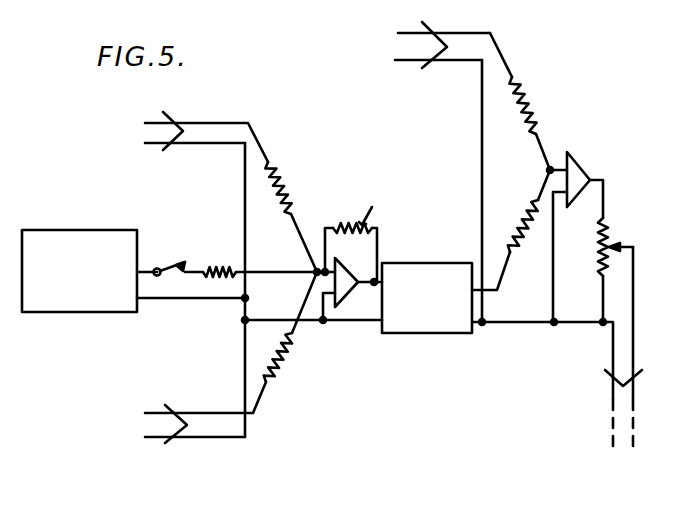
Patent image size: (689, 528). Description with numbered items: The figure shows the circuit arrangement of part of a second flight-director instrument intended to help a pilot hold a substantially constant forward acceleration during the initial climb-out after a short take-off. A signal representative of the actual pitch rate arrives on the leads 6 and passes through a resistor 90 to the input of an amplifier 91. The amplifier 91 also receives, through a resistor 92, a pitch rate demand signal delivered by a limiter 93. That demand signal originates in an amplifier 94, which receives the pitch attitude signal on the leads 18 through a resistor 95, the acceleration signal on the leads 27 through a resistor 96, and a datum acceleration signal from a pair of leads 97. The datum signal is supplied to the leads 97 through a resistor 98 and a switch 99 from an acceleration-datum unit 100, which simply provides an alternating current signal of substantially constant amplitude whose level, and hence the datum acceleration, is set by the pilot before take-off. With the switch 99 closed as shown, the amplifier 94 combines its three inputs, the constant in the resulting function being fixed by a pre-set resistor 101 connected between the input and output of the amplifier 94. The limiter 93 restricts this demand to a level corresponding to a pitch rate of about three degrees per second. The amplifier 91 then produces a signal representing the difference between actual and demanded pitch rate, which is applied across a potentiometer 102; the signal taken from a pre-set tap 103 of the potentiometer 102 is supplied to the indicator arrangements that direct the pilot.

The leads 6 is at (396, 41).
The leads 18 is at (150, 124).
The leads 27 is at (156, 421).
The resistor 90 is at (529, 104).
The amplifier 91 is at (576, 153).
The resistor 92 is at (522, 250).
The limiter 93 is at (404, 334).
The amplifier 94 is at (355, 304).
The resistor 95 is at (284, 190).
The resistor 96 is at (280, 377).
The leads 97 is at (240, 279).
The resistor 98 is at (214, 265).
The switch 99 is at (176, 264).
The acceleration-datum unit 100 is at (85, 229).
The pre-set resistor 101 is at (342, 222).
The potentiometer 102 is at (606, 218).
The pre-set tap 103 is at (626, 255).